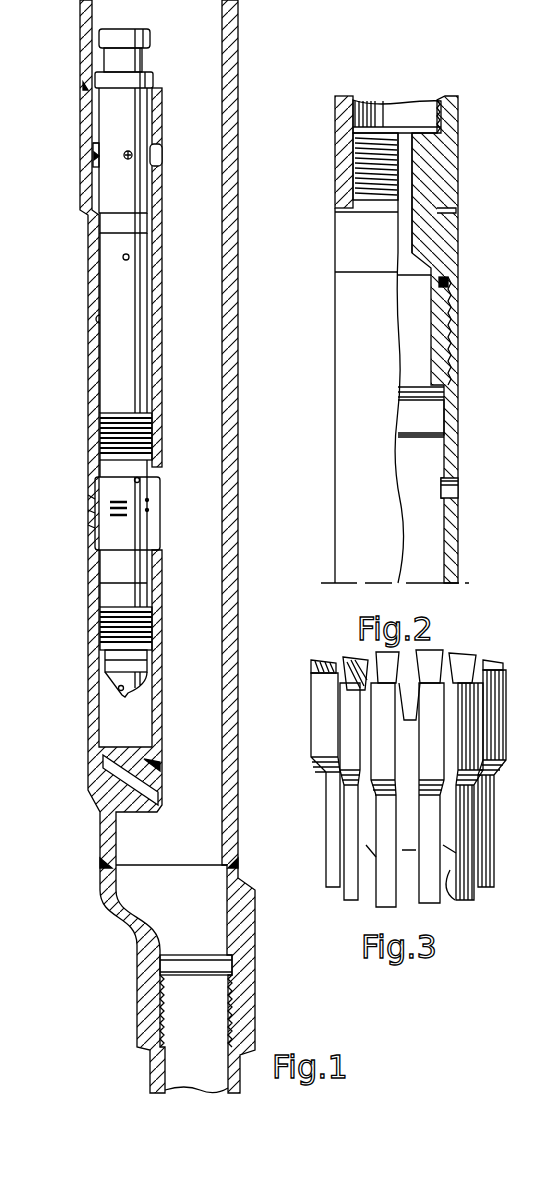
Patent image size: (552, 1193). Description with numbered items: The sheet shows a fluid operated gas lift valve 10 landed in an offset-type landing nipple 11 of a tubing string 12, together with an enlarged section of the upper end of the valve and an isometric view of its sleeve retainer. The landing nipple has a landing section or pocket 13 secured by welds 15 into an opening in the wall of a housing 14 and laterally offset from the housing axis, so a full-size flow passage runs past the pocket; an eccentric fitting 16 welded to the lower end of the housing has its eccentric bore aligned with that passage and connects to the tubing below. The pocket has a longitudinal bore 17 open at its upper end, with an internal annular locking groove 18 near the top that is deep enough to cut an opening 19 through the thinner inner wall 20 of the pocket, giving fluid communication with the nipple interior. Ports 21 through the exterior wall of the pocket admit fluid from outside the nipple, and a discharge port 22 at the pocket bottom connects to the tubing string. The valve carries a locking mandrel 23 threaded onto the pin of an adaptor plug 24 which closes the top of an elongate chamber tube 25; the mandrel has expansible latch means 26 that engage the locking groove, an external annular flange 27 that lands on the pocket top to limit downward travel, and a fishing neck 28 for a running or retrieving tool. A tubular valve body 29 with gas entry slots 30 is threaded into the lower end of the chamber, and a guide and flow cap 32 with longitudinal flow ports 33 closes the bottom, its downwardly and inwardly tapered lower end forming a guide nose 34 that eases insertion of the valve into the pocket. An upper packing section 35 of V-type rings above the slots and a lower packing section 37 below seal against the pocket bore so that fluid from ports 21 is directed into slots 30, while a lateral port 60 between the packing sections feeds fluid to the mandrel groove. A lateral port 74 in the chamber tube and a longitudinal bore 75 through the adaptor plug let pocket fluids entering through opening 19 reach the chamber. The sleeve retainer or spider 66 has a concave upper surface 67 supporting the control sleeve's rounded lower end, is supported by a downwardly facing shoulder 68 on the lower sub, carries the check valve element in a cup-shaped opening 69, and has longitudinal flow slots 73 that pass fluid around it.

In FIG. 1, the gas lift valve 10 is at (105, 300).
In FIG. 2, the gas lift valve 10 is at (335, 341).
In FIG. 1, the landing nipple 11 is at (80, 15).
In FIG. 1, the tubing string 12 is at (150, 1067).
In FIG. 1, the landing section or pocket 13 is at (80, 113).
In FIG. 1, the housing 14 is at (100, 833).
In FIG. 1, the welds 15 is at (84, 86).
In FIG. 1, the eccentric fitting 16 is at (110, 908).
In FIG. 1, the longitudinal bore 17 is at (97, 319).
In FIG. 1, the locking groove or recess 18 is at (95, 155).
In FIG. 1, the opening 19 is at (160, 152).
In FIG. 1, the inner wall 20 is at (160, 113).
In FIG. 2, the inner wall 20 is at (435, 339).
In FIG. 1, the ports 21 is at (90, 527).
In FIG. 1, the discharge port 22 is at (158, 785).
In FIG. 1, the locking mandrel 23 is at (105, 177).
In FIG. 2, the locking mandrel 23 is at (335, 163).
In FIG. 1, the adaptor plug 24 is at (107, 222).
In FIG. 2, the adaptor plug 24 is at (343, 248).
In FIG. 1, the chamber member or tube 25 is at (103, 275).
In FIG. 2, the chamber member or tube 25 is at (340, 406).
In FIG. 1, the latch means 26 is at (93, 147).
In FIG. 1, the external annular flange 27 is at (95, 78).
In FIG. 1, the fishing neck or gripping head 28 is at (99, 42).
In FIG. 1, the valve body 29 is at (107, 487).
In FIG. 1, the gas entry ports or slots 30 is at (147, 509).
In FIG. 1, the guide and flow cap 32 is at (107, 660).
In FIG. 1, the longitudinal flow ports 33 is at (124, 693).
In FIG. 1, the port 34 is at (118, 686).
In FIG. 1, the upper packing section 35 is at (100, 426).
In FIG. 1, the lower packing section 37 is at (100, 613).
In FIG. 1, the lateral port 60 is at (136, 480).
In FIG. 3, the sleeve retainer or spider 66 is at (346, 762).
In FIG. 3, the concave upper surface 67 is at (357, 662).
In FIG. 3, the external annular downwardly facing shoulder 68 is at (492, 772).
In FIG. 3, the cup-shaped or concave opening 69 is at (455, 875).
In FIG. 3, the longitudinal flow slots 73 is at (455, 720).
In FIG. 1, the lateral port 74 is at (122, 257).
In FIG. 2, the lateral port 74 is at (456, 487).
In FIG. 2, the longitudinal bore 75 is at (404, 219).